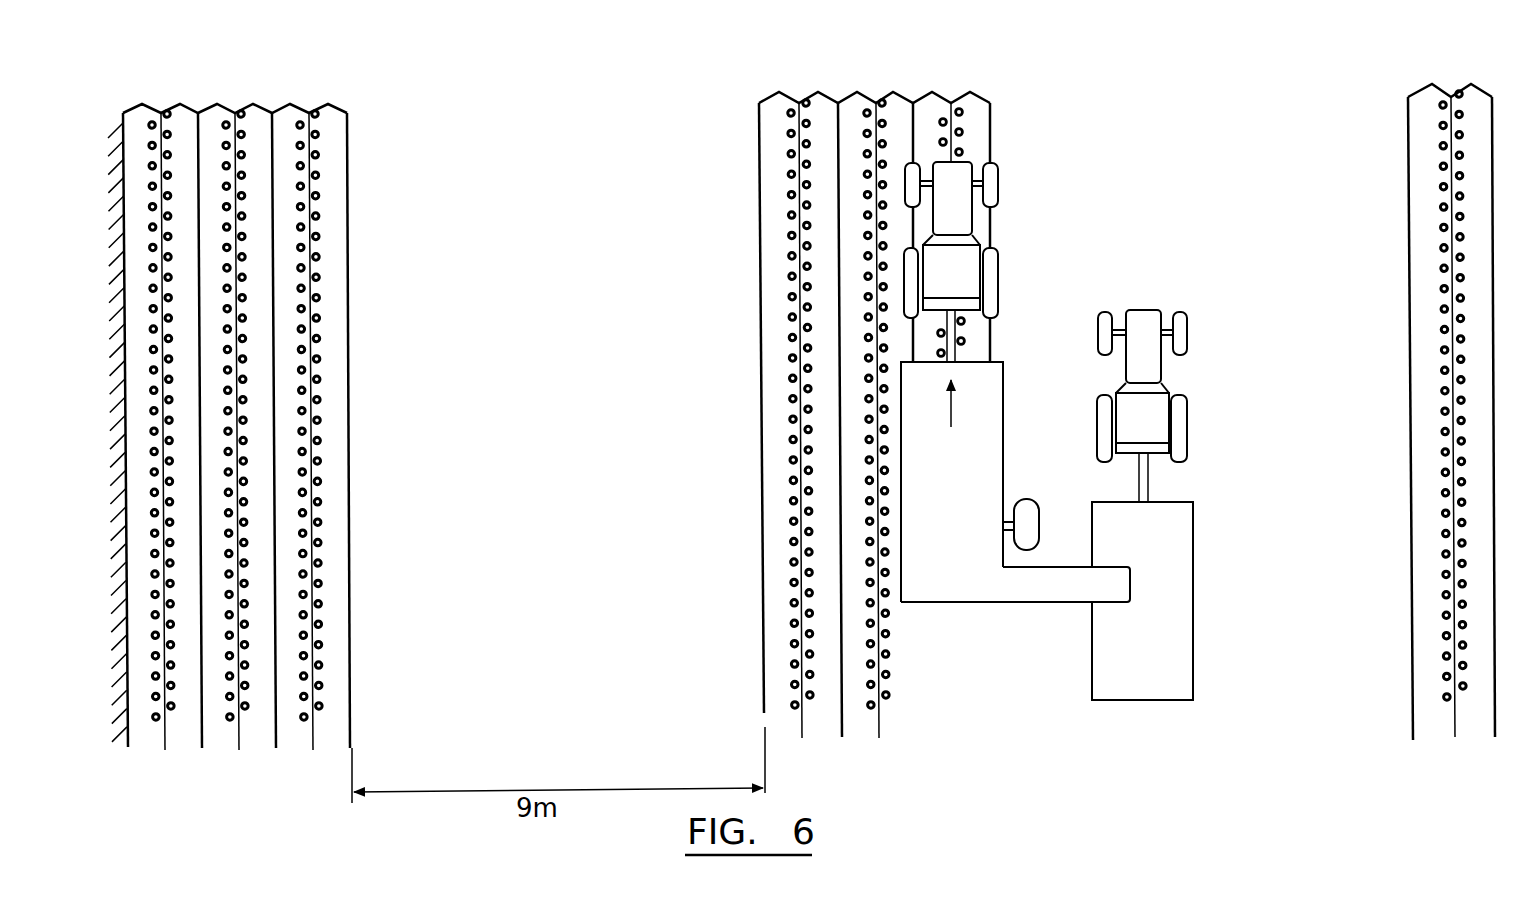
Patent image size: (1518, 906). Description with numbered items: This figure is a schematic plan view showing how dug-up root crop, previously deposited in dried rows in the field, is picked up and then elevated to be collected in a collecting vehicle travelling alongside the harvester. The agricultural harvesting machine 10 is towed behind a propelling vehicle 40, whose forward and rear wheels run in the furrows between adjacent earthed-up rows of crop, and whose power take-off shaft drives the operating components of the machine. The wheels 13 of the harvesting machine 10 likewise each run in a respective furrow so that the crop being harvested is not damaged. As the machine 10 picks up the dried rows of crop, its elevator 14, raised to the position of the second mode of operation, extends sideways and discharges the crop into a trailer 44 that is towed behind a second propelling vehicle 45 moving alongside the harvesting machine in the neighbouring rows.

The propelling vehicle 40 is at (957, 273).
The agricultural harvesting machine 10 is at (1004, 449).
The wheels 13 is at (1027, 518).
The elevator 14 is at (1047, 593).
The trailer 44 is at (1198, 557).
The propelling vehicle 45 is at (1155, 408).